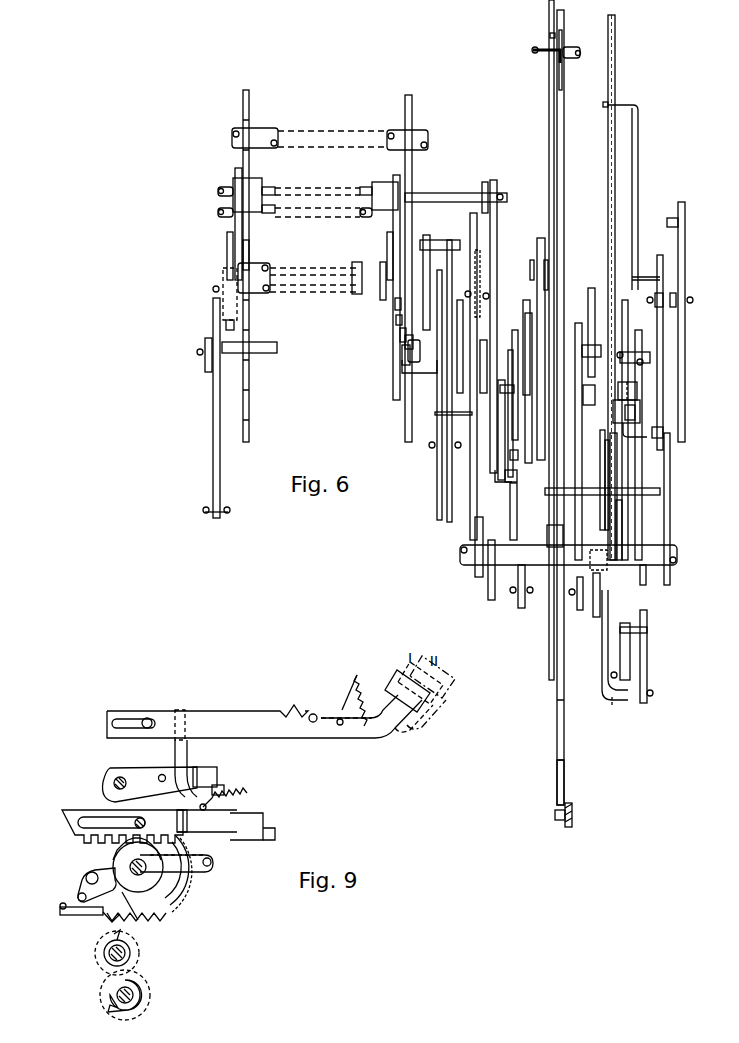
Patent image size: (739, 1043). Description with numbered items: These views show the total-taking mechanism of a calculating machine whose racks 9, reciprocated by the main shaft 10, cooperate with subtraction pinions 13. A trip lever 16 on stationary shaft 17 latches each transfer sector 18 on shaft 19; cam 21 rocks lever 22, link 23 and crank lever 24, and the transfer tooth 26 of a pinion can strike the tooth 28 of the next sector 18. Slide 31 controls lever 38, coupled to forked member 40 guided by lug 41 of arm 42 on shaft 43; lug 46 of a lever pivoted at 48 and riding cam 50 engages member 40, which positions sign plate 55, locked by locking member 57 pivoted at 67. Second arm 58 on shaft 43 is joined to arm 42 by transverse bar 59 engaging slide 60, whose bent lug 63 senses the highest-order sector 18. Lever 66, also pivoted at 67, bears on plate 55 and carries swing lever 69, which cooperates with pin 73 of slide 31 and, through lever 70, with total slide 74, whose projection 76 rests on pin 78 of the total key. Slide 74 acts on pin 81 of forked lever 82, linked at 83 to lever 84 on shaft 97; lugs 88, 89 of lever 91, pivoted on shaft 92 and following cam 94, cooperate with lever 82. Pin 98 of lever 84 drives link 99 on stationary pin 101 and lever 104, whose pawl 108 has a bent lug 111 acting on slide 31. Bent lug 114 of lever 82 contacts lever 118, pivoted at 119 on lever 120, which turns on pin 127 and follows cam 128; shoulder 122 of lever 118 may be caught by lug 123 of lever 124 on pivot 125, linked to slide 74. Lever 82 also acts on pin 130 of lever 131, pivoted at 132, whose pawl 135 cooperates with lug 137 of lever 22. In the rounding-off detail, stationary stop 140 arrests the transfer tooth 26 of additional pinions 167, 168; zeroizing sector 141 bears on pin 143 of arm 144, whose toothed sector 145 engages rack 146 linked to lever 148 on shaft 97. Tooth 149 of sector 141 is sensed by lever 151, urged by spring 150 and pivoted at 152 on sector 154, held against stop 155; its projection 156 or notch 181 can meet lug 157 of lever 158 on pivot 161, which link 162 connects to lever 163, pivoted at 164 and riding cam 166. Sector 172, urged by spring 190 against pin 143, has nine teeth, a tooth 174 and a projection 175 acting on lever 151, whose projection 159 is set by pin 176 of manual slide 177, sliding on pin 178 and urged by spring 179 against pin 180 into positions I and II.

In FIG. 6, the shaft 9 is at (249, 406).
In FIG. 6, the rod 10 is at (483, 370).
In FIG. 6, the shaft portion 13 is at (249, 259).
In FIG. 6, the bearing block 16 is at (238, 178).
In FIG. 6, the stud 17 is at (222, 216).
In FIG. 9, the stud 17 is at (62, 908).
In FIG. 6, the bar 18 is at (227, 256).
In FIG. 6, the rack 19 is at (213, 289).
In FIG. 9, the rack 19 is at (120, 845).
In FIG. 6, the rod 21 is at (528, 313).
In FIG. 6, the member 22 is at (520, 478).
In FIG. 6, the rod 23 is at (497, 206).
In FIG. 6, the rod 24 is at (484, 182).
In FIG. 9, the cam 26 is at (112, 935).
In FIG. 6, the bar 28 is at (387, 278).
In FIG. 6, the rod 31 is at (608, 190).
In FIG. 6, the bar 38 is at (628, 478).
In FIG. 6, the bar 40 is at (625, 540).
In FIG. 6, the bracket 41 is at (635, 437).
In FIG. 6, the block 42 is at (640, 405).
In FIG. 6, the stud 43 is at (199, 355).
In FIG. 6, the block 46 is at (637, 388).
In FIG. 6, the pin 48 is at (635, 412).
In FIG. 6, the member 50 is at (592, 395).
In FIG. 6, the block 55 is at (630, 662).
In FIG. 6, the bar 57 is at (647, 633).
In FIG. 6, the plate 58 is at (207, 338).
In FIG. 6, the bar 59 is at (265, 354).
In FIG. 6, the rod 60 is at (213, 405).
In FIG. 6, the sleeve 63 is at (237, 308).
In FIG. 6, the bracket 66 is at (602, 661).
In FIG. 6, the stud 67 is at (652, 688).
In FIG. 6, the rod 69 is at (596, 617).
In FIG. 6, the rod 70 is at (580, 610).
In FIG. 6, the rod 73 is at (595, 550).
In FIG. 6, the rod 74 is at (564, 100).
In FIG. 6, the rod end 76 is at (564, 787).
In FIG. 6, the foot plate 78 is at (555, 815).
In FIG. 6, the bar 81 is at (518, 415).
In FIG. 6, the bar 82 is at (550, 492).
In FIG. 6, the bar 83 is at (645, 505).
In FIG. 6, the bar 84 is at (670, 523).
In FIG. 6, the block 88 is at (563, 530).
In FIG. 6, the rod 89 is at (578, 323).
In FIG. 6, the rod 91 is at (605, 480).
In FIG. 6, the rod 92 is at (605, 463).
In FIG. 6, the rod 94 is at (591, 288).
In FIG. 6, the bar 97 is at (645, 565).
In FIG. 6, the block 98 is at (663, 435).
In FIG. 6, the rod 99 is at (685, 250).
In FIG. 6, the stud 101 is at (690, 300).
In FIG. 6, the rod 104 is at (663, 345).
In FIG. 6, the bracket 108 is at (638, 150).
In FIG. 6, the tab 111 is at (620, 103).
In FIG. 6, the member 114 is at (520, 460).
In FIG. 6, the rod 118 is at (549, 142).
In FIG. 6, the rod 119 is at (540, 240).
In FIG. 6, the member 120 is at (540, 270).
In FIG. 6, the tab 122 is at (550, 35).
In FIG. 6, the hook 123 is at (545, 58).
In FIG. 6, the rod 124 is at (565, 30).
In FIG. 6, the sleeve 125 is at (576, 47).
In FIG. 6, the member 127 is at (548, 280).
In FIG. 6, the bar 128 is at (505, 440).
In FIG. 6, the bar 130 is at (568, 555).
In FIG. 6, the rod 131 is at (525, 575).
In FIG. 6, the stud 132 is at (512, 595).
In FIG. 6, the rod 135 is at (510, 510).
In FIG. 6, the bracket 137 is at (500, 480).
In FIG. 6, the lever 140 is at (400, 240).
In FIG. 9, the lever 140 is at (112, 915).
In FIG. 6, the member 141 is at (400, 335).
In FIG. 6, the lever 143 is at (438, 240).
In FIG. 9, the lever 143 is at (88, 875).
In FIG. 6, the gear segment 144 is at (430, 260).
In FIG. 9, the gear segment 144 is at (124, 858).
In FIG. 6, the pin 145 is at (480, 275).
In FIG. 9, the pin 145 is at (146, 823).
In FIG. 6, the arm 146 is at (435, 413).
In FIG. 9, the arm 146 is at (237, 822).
In FIG. 6, the bar 148 is at (478, 577).
In FIG. 6, the member 149 is at (395, 305).
In FIG. 9, the spring 150 is at (242, 789).
In FIG. 6, the arm 151 is at (405, 345).
In FIG. 9, the arm 151 is at (237, 843).
In FIG. 9, the link 152 is at (212, 862).
In FIG. 6, the member 154 is at (398, 320).
In FIG. 9, the member 154 is at (132, 915).
In FIG. 9, the arm end 155 is at (263, 836).
In FIG. 9, the spring anchor 156 is at (225, 790).
In FIG. 6, the block 157 is at (420, 373).
In FIG. 9, the block 157 is at (215, 767).
In FIG. 6, the lever 158 is at (410, 352).
In FIG. 9, the lever 158 is at (137, 770).
In FIG. 9, the link 159 is at (175, 750).
In FIG. 9, the pivot 161 is at (114, 778).
In FIG. 6, the bar 162 is at (437, 470).
In FIG. 6, the bar 163 is at (447, 495).
In FIG. 6, the stud 164 is at (430, 448).
In FIG. 6, the bar 166 is at (520, 340).
In FIG. 9, the cam path 167 is at (150, 997).
In FIG. 9, the cam path 168 is at (138, 958).
In FIG. 9, the teeth 172 is at (158, 922).
In FIG. 9, the arc guide 174 is at (180, 905).
In FIG. 9, the arc guide 175 is at (188, 885).
In FIG. 9, the rod 176 is at (187, 716).
In FIG. 9, the pedal lever 177 is at (298, 740).
In FIG. 9, the slot pin 178 is at (148, 718).
In FIG. 9, the spring 179 is at (345, 702).
In FIG. 9, the pivot 180 is at (311, 714).
In FIG. 9, the pin 181 is at (200, 806).
In FIG. 9, the hole 190 is at (85, 880).